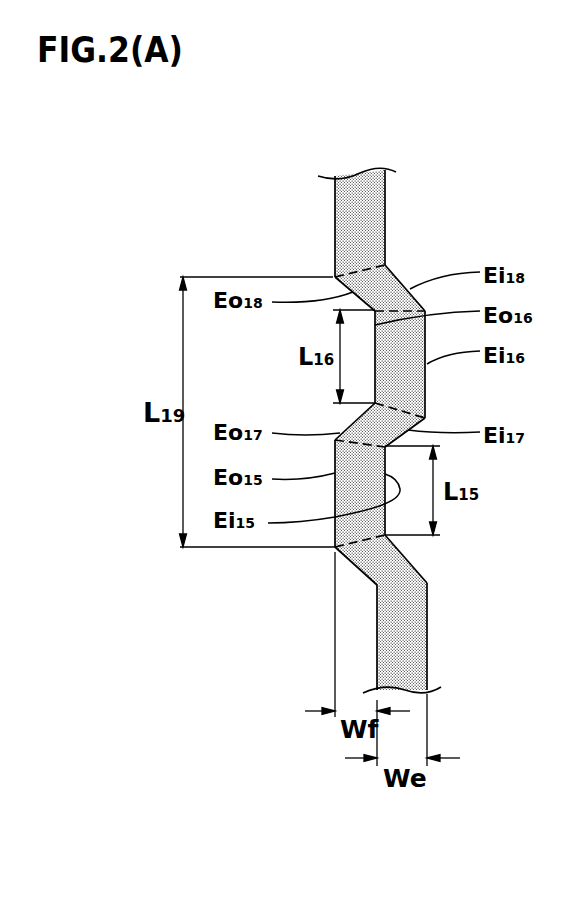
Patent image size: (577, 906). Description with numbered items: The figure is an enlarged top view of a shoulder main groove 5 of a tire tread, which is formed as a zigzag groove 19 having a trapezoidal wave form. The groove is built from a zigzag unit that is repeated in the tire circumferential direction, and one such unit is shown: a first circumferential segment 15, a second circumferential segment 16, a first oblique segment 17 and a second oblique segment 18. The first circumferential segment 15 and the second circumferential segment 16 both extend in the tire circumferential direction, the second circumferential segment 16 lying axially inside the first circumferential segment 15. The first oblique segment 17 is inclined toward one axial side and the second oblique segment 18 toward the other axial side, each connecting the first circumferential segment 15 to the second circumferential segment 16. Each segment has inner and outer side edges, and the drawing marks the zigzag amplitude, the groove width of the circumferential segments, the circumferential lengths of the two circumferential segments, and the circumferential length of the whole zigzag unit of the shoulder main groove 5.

The shoulder main groove 5 is at (360, 205).
The zigzag groove 19 is at (357, 222).
The second oblique segment 18 is at (382, 285).
The second circumferential segment 16 is at (405, 383).
The first oblique segment 17 is at (363, 414).
The first circumferential segment 15 is at (360, 522).